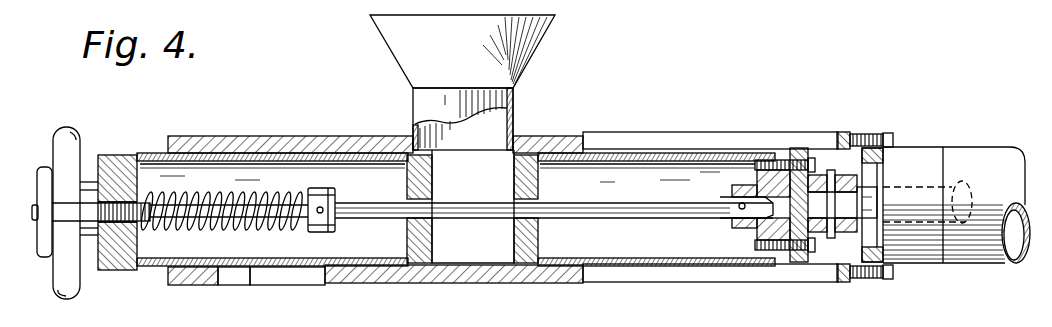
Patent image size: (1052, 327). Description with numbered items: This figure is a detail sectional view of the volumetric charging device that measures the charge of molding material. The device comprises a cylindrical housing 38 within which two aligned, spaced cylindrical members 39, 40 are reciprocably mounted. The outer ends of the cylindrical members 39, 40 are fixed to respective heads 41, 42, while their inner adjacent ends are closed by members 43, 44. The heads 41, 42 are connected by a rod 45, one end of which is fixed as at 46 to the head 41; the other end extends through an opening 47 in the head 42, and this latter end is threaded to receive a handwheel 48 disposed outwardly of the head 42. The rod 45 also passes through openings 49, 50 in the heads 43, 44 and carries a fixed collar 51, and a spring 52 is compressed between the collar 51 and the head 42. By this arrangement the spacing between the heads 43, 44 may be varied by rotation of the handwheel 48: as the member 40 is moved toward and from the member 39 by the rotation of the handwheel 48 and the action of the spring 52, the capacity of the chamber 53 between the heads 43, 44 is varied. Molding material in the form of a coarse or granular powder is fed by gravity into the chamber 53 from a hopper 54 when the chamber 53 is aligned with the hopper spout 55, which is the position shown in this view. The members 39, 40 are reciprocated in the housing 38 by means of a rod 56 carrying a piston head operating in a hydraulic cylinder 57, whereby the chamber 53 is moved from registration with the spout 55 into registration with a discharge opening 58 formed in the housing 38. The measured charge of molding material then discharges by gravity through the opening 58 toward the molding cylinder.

The cylindrical housing 38 is at (729, 133).
The cylindrical member 39 is at (668, 151).
The cylindrical member 40 is at (249, 286).
The head 41 is at (792, 263).
The head 42 is at (100, 272).
The member (head) 43 is at (513, 240).
The member (head) 44 is at (432, 243).
The rod 45 is at (622, 222).
The fixed end connection 46 is at (738, 209).
The opening 47 is at (105, 203).
The handwheel 48 is at (55, 133).
The opening 49 is at (532, 200).
The opening 50 is at (427, 200).
The fixed collar 51 is at (336, 188).
The spring 52 is at (222, 195).
The chamber 53 is at (457, 252).
The hopper 54 is at (535, 55).
The hopper spout 55 is at (514, 116).
The rod 56 is at (962, 181).
The hydraulic cylinder 57 is at (970, 147).
The discharge opening 58 is at (322, 287).